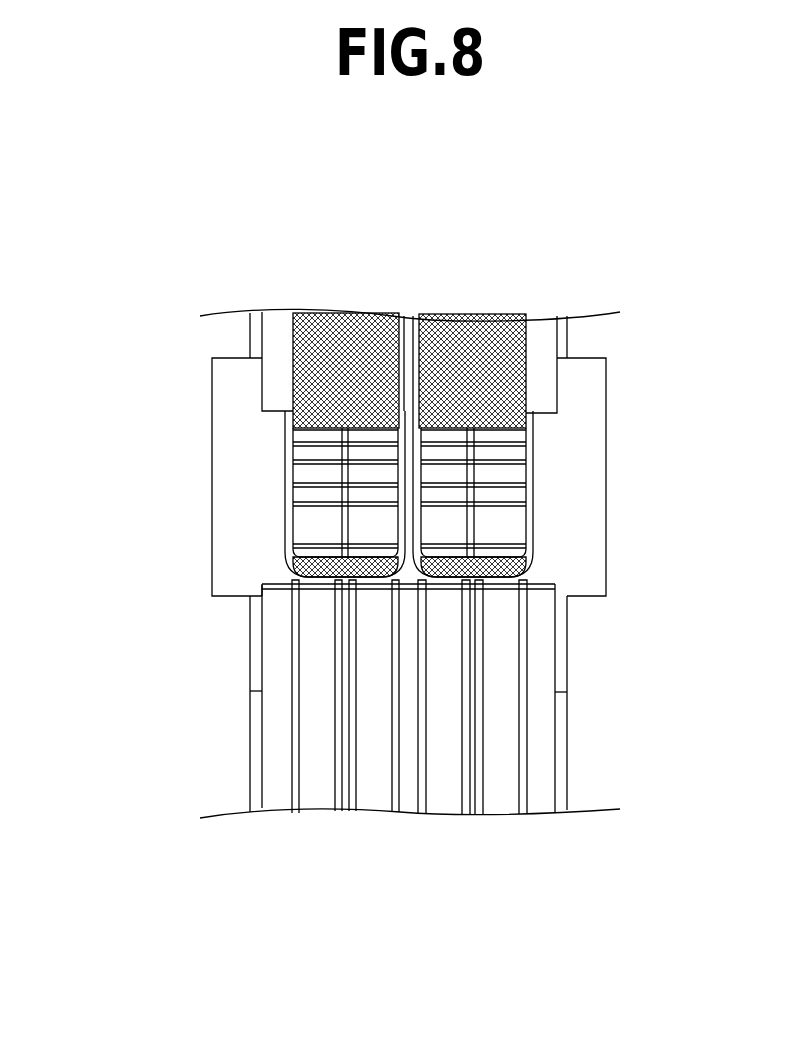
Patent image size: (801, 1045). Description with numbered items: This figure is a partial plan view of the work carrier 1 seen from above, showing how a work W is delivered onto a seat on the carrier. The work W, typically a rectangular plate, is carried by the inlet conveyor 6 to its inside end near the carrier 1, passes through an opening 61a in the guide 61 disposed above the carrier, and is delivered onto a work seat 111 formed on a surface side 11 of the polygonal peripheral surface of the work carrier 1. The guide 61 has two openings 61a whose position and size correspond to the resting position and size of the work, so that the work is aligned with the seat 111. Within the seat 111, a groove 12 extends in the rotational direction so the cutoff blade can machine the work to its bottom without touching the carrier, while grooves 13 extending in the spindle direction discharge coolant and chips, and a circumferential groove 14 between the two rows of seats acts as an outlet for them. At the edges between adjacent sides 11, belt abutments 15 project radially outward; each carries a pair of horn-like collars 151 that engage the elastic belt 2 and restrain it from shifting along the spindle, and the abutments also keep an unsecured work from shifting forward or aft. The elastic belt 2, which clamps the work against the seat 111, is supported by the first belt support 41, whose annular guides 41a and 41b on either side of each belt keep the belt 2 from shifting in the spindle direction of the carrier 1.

The work carrier 1 is at (257, 659).
The elastic belt 2 is at (510, 675).
The inlet conveyor 6 is at (543, 341).
The surface side 11 is at (257, 632).
The groove 12 is at (345, 510).
The grooves 13 is at (293, 484).
The groove 14 is at (398, 451).
The belt abutment 15 is at (500, 548).
The first belt support 41 is at (542, 797).
The annular guide 41a is at (523, 817).
The annular guide 41b is at (475, 817).
The guide 61 is at (583, 393).
The opening 61a is at (533, 538).
The work seat 111 is at (293, 463).
The collar 151 is at (480, 542).
The work W is at (478, 338).